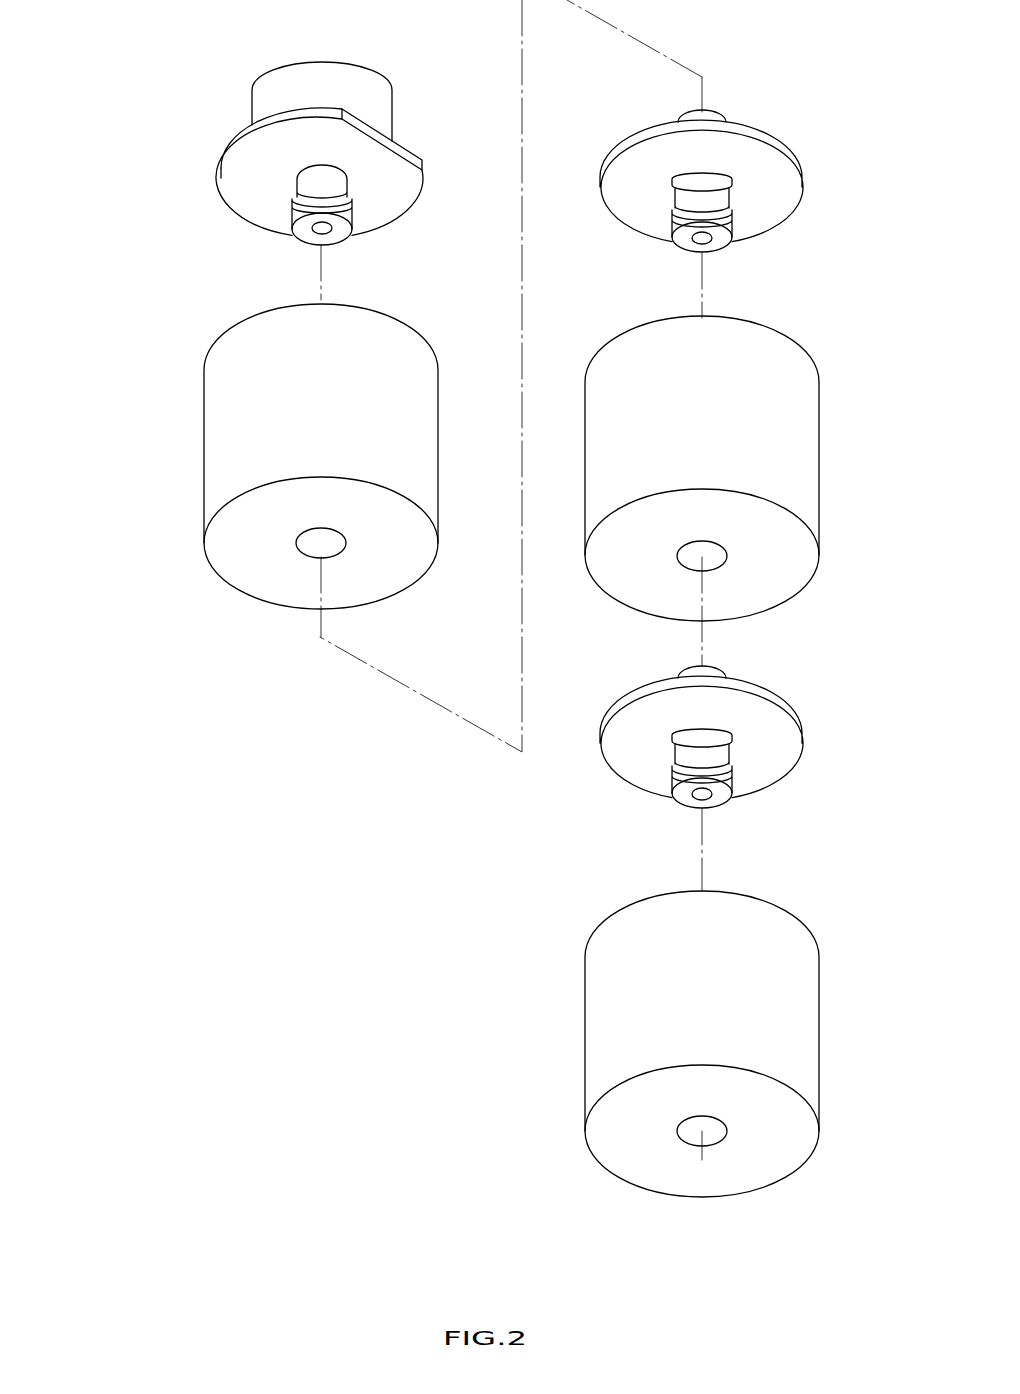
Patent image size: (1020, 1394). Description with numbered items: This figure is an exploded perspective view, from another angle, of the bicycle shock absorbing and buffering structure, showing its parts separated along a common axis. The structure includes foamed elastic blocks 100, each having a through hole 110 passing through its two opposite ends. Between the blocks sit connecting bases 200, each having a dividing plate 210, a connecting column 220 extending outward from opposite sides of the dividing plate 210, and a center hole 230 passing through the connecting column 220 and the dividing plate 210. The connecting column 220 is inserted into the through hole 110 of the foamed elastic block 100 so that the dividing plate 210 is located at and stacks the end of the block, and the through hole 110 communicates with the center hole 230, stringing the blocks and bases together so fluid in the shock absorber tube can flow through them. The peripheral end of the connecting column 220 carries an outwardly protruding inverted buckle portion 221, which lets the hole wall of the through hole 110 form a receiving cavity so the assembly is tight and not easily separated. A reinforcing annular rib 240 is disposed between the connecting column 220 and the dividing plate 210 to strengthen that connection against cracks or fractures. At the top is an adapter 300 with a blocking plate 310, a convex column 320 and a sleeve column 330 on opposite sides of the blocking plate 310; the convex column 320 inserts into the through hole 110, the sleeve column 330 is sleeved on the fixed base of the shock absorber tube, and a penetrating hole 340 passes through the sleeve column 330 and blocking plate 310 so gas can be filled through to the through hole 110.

The foamed elastic block 100 is at (446, 772).
The through hole 110 is at (296, 545).
The connecting base 200 is at (675, 483).
The dividing plate 210 is at (773, 162).
The connecting column 220 is at (694, 522).
The inverted buckle portion 221 is at (733, 232).
The center hole 230 is at (700, 243).
The reinforcing annular rib 240 is at (700, 178).
The adapter 300 is at (292, 176).
The blocking plate 310 is at (230, 150).
The convex column 320 is at (300, 183).
The sleeve column 330 is at (380, 103).
The penetrating hole 340 is at (318, 233).